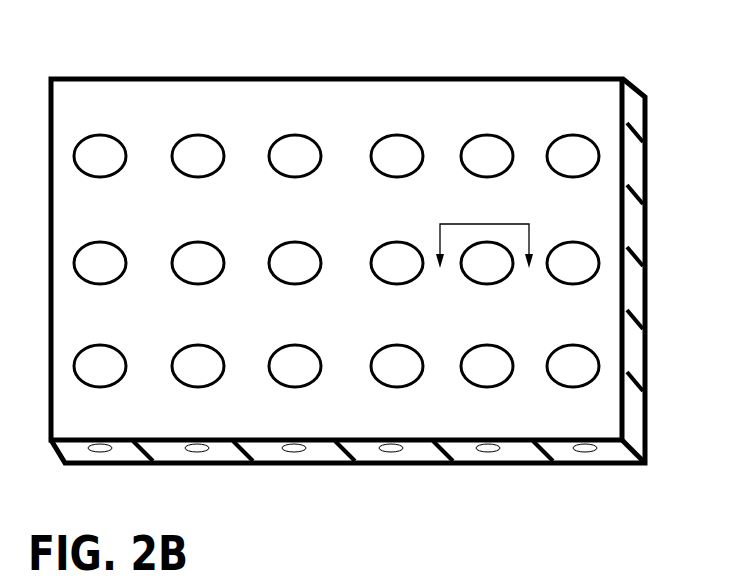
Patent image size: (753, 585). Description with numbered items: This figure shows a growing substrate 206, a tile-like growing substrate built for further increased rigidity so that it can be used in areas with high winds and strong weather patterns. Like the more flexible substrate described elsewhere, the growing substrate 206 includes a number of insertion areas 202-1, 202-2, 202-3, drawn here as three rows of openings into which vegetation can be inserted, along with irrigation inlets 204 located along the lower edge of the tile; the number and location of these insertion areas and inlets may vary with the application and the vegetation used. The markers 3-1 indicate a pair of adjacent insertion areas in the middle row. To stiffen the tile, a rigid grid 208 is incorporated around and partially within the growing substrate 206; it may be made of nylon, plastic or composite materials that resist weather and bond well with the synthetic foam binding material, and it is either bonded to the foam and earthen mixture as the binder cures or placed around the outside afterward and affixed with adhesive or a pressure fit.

The growing substrate 206 is at (336, 259).
The rigid grid 208 is at (626, 80).
The insertion area 202-1 is at (80, 387).
The insertion area 202-2 is at (80, 298).
The insertion area 202-3 is at (73, 184).
The section indicator 3-1 is at (484, 236).
The irrigation inlets 204 is at (598, 488).